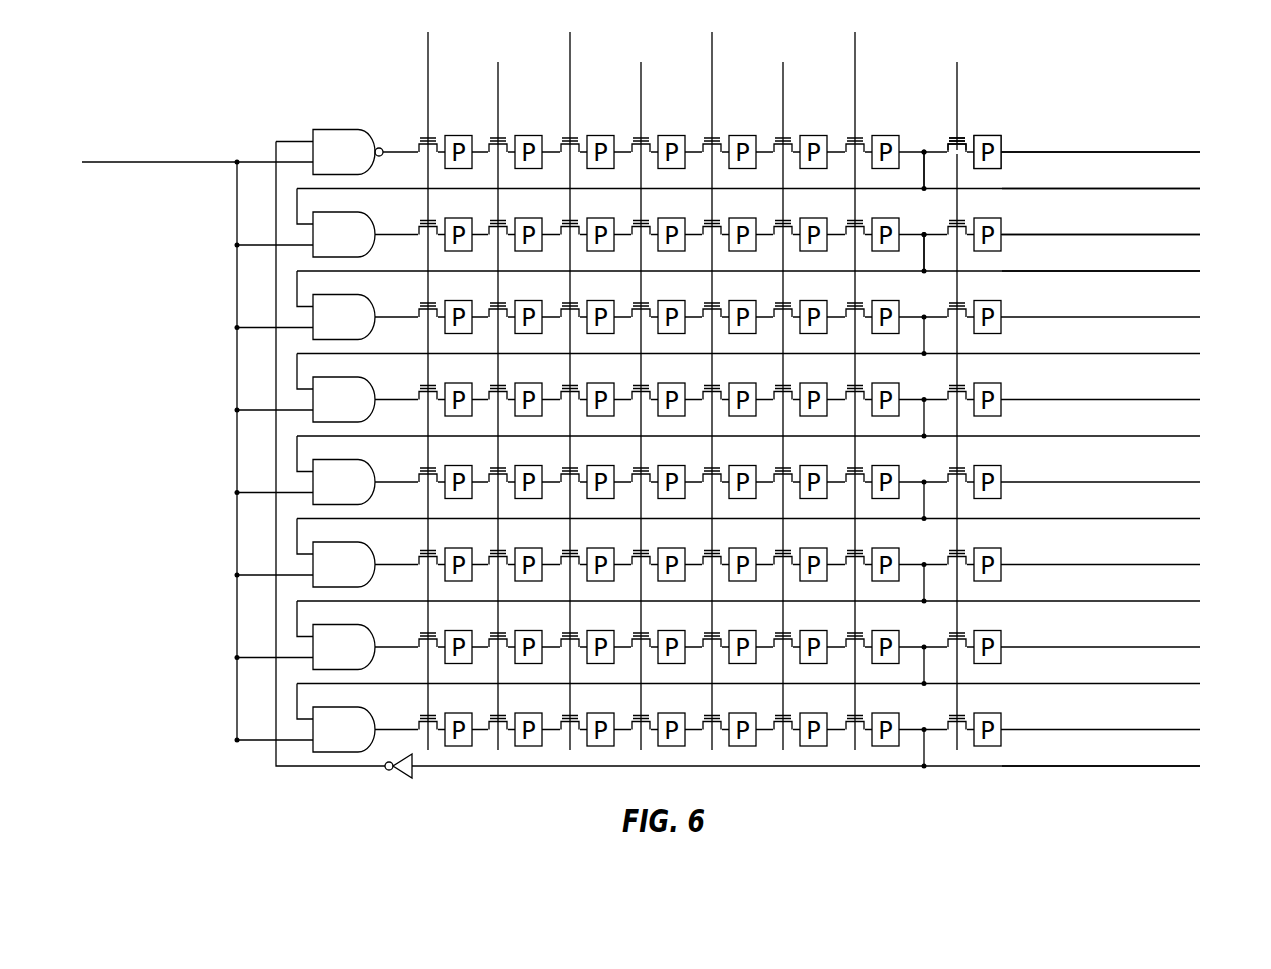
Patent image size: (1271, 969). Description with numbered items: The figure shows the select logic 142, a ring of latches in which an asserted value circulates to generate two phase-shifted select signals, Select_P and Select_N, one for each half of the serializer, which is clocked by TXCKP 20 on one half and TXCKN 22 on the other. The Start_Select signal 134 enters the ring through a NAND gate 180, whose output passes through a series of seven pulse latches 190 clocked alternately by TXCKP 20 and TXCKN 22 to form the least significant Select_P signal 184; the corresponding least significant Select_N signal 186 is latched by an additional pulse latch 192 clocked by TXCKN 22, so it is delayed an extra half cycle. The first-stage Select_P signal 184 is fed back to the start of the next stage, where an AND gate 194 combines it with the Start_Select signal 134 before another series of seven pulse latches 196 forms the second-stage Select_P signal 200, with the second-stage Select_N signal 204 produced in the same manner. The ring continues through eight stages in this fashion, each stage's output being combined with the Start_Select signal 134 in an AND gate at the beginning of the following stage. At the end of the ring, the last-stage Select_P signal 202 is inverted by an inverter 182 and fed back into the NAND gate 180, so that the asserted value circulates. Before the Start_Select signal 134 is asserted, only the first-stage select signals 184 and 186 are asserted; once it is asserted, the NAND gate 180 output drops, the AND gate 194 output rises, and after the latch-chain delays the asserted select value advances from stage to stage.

The select logic 142 is at (256, 73).
The NAND gate 180 is at (337, 128).
The Start_Select signal 134 is at (107, 167).
The AND gate 194 is at (366, 216).
The TXCKP 20 is at (428, 88).
The TXCKN 22 is at (498, 88).
The pulse latches 190 is at (937, 120).
The pulse latches 196 is at (938, 218).
The pulse latch 192 is at (988, 134).
The Select_N[0] signal 186 is at (1196, 152).
The Select_P[0] signal 184 is at (1196, 188).
The Select_N[1] signal 204 is at (1196, 234).
The Select_P[1] signal 200 is at (1196, 271).
The Select_P[7] signal 202 is at (1196, 766).
The inverter 182 is at (400, 778).